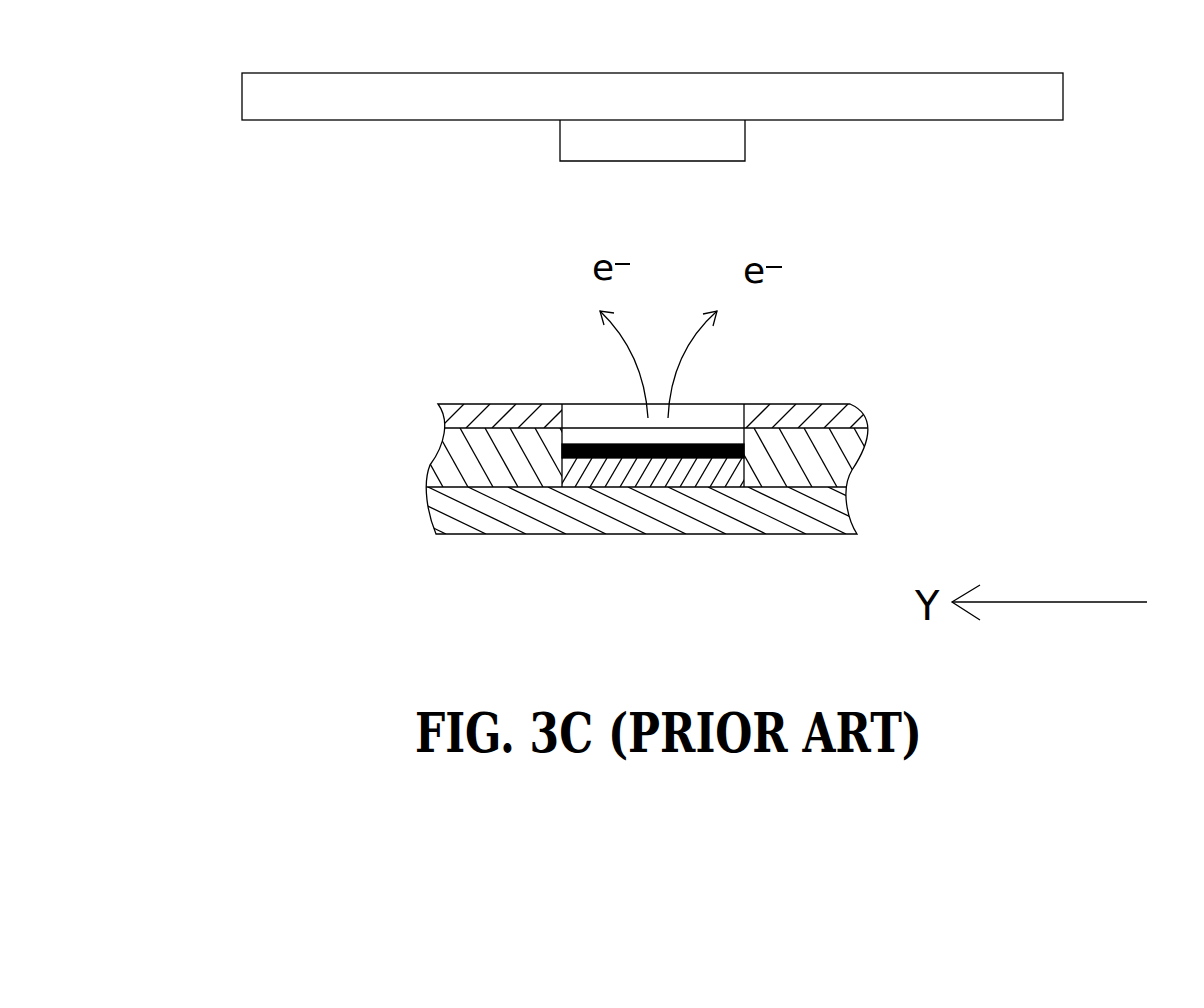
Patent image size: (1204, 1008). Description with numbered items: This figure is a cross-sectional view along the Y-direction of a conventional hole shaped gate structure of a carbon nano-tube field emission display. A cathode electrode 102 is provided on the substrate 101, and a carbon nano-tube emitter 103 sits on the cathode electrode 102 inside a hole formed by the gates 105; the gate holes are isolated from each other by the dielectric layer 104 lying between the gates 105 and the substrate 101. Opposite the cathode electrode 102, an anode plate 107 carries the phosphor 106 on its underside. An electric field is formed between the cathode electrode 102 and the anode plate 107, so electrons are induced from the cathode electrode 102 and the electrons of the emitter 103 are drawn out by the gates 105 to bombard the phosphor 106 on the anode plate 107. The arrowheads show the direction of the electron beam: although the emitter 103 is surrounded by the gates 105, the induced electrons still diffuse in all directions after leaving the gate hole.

The substrate 101 is at (840, 504).
The cathode electrode 102 is at (670, 480).
The carbon nano-tube emitter 103 is at (624, 458).
The dielectric layer 104 is at (843, 447).
The gate 105 is at (852, 404).
The phosphor 106 is at (598, 140).
The anode plate 107 is at (268, 97).